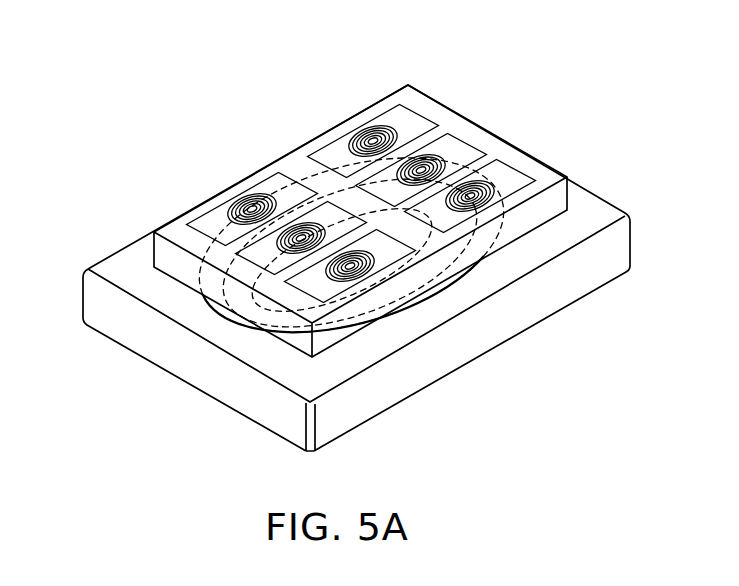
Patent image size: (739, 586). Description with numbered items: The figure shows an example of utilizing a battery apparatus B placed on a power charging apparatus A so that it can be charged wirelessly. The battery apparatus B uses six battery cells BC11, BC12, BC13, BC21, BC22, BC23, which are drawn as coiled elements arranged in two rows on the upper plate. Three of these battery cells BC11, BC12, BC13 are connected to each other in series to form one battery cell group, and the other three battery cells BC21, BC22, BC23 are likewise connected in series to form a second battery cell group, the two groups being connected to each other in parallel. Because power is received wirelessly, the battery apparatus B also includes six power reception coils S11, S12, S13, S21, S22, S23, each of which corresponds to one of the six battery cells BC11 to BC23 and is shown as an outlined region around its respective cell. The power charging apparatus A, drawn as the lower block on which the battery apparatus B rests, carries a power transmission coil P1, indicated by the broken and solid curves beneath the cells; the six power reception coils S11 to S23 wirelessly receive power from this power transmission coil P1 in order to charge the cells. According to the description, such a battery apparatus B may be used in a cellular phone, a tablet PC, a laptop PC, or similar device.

The power charging apparatus A is at (602, 203).
The battery apparatus B is at (495, 138).
The power reception coil S11 is at (236, 206).
The power reception coil S12 is at (236, 253).
The power reception coil S13 is at (290, 278).
The power reception coil S21 is at (362, 133).
The power reception coil S22 is at (432, 155).
The power reception coil S23 is at (518, 178).
The battery cell BC11 is at (272, 184).
The battery cell BC12 is at (284, 252).
The battery cell BC13 is at (328, 272).
The battery cell BC21 is at (397, 112).
The battery cell BC22 is at (465, 146).
The battery cell BC23 is at (520, 172).
The power transmission coil P1 is at (433, 298).